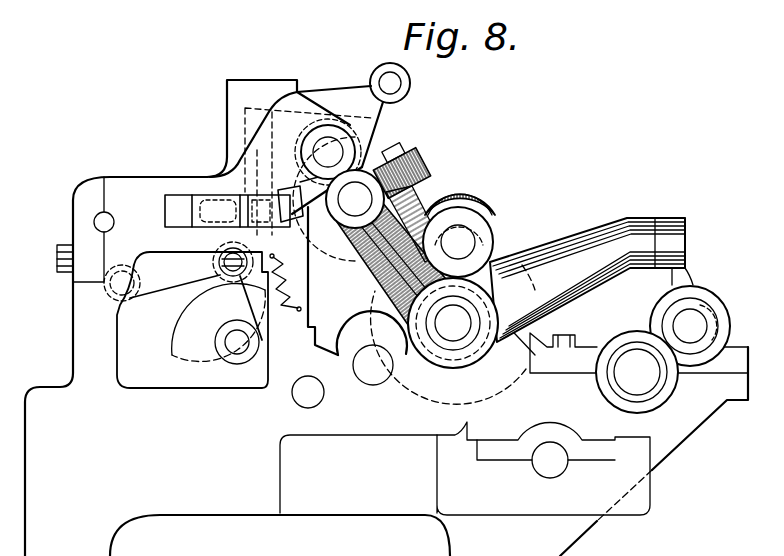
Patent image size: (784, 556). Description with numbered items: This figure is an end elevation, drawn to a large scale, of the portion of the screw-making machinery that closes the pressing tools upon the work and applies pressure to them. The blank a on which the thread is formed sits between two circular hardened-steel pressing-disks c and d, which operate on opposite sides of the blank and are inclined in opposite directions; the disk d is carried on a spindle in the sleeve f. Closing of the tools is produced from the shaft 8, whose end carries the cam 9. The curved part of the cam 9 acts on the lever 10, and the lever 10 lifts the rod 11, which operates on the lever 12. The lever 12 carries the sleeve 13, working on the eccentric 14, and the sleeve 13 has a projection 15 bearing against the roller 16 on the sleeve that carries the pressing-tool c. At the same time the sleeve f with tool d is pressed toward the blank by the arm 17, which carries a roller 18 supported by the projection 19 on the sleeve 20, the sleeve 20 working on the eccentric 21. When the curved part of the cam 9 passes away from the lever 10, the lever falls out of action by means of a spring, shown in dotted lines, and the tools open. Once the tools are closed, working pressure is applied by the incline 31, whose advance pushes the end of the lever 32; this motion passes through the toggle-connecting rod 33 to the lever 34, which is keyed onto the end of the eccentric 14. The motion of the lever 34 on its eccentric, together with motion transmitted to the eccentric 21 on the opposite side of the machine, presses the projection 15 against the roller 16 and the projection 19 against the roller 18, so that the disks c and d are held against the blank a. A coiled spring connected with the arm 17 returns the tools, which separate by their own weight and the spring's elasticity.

The shaft 8 is at (237, 342).
The cam 9 is at (192, 320).
The lever 10 is at (196, 291).
The rod 11 is at (308, 171).
The lever 12 is at (317, 151).
The sleeve 13 is at (338, 199).
The eccentric 14 is at (299, 179).
The projection 15 is at (353, 115).
The roller 16 is at (409, 202).
The arm 17 is at (587, 280).
The roller 18 is at (674, 251).
The projection 19 is at (697, 289).
The sleeve 20 is at (722, 320).
The eccentric 21 is at (656, 359).
The incline 31 is at (178, 211).
The lever 32 is at (216, 211).
The toggle-connecting rod 33 is at (265, 211).
The lever 34 is at (320, 195).
The blank a is at (396, 261).
The pressing-disk c is at (358, 264).
The pressing-disk d is at (484, 226).
The sleeve f is at (460, 198).